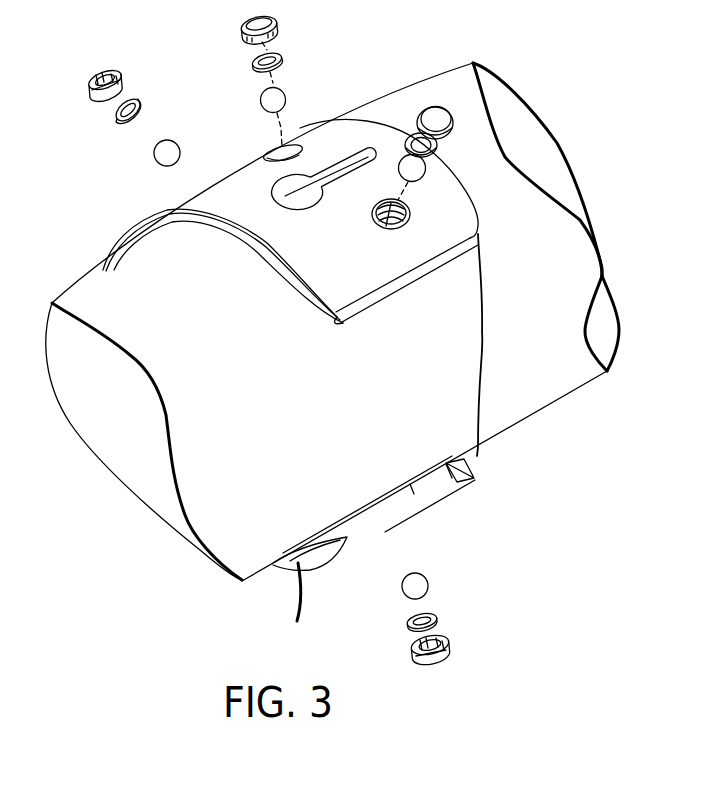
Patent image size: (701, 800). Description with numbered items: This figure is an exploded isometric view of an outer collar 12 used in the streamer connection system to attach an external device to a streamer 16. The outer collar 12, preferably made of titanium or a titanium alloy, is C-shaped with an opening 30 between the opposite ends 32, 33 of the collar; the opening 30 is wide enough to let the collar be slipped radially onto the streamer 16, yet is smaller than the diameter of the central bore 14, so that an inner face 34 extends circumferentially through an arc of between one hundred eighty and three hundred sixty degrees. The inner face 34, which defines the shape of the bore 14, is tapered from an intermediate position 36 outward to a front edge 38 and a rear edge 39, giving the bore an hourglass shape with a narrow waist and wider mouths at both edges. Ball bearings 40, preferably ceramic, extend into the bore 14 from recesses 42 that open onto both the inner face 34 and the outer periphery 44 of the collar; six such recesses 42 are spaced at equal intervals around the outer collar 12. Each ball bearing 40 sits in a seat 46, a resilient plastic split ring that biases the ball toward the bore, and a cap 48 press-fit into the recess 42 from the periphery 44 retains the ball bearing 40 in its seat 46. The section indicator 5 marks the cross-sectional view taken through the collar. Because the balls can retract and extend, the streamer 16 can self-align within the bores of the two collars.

The section line 5- 5 is at (316, 174).
The outer collar 12 is at (113, 240).
The central bore 14 is at (150, 243).
The streamer 16 is at (243, 558).
The opening 30 is at (483, 333).
The end of the collar 32 is at (480, 237).
The end of the collar 33 is at (389, 523).
The inner face 34 is at (463, 481).
The intermediate position 36 is at (410, 485).
The front edge 38 is at (475, 466).
The rear edge 39 is at (297, 619).
The ball bearing 40 is at (160, 157).
The recess 42 is at (277, 155).
The outer periphery 44 is at (225, 187).
The seat 46 is at (281, 55).
The cap 48 is at (261, 19).